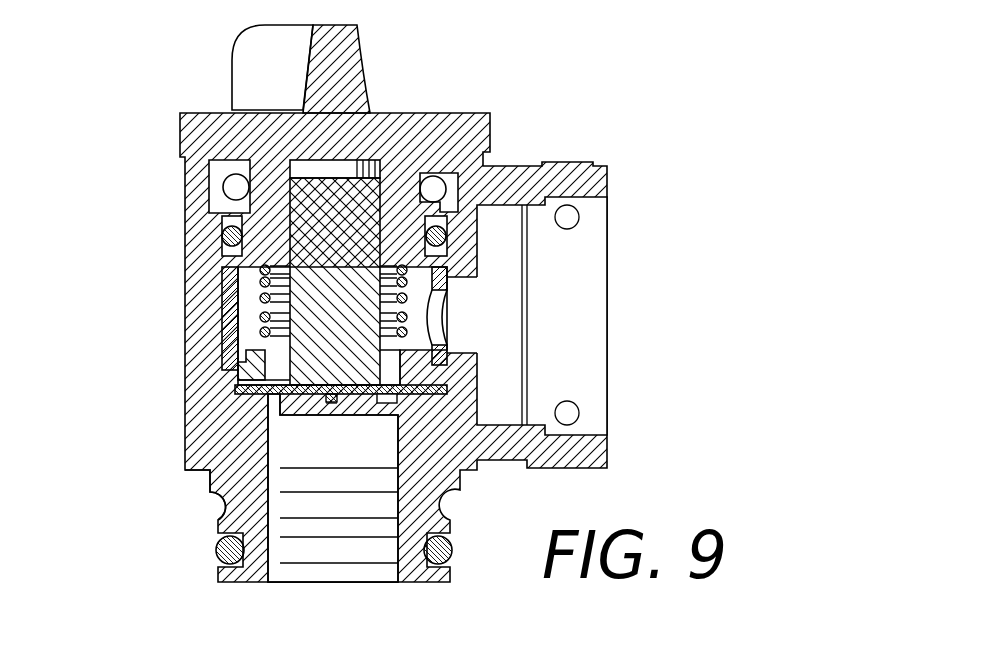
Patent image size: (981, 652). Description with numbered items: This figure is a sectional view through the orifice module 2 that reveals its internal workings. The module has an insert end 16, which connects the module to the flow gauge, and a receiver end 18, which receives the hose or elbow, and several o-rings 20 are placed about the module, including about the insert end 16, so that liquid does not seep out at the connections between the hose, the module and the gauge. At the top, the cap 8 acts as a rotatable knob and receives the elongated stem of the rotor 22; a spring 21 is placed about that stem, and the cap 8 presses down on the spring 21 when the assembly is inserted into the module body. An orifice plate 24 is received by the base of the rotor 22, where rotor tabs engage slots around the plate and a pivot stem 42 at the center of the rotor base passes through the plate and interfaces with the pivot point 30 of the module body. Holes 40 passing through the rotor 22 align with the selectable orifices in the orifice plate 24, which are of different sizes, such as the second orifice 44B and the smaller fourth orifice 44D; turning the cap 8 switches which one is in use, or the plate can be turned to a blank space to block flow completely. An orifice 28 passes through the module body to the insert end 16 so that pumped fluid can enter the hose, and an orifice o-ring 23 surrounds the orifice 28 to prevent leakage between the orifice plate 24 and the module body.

The orifice module 2 is at (728, 203).
The cap 8 is at (240, 43).
The insert end 16 is at (231, 582).
The receiver end 18 is at (608, 292).
The o-ring 20 is at (222, 232).
The spring 21 is at (270, 308).
The rotor 22 is at (315, 219).
The orifice o-ring 23 is at (237, 389).
The orifice plate 24 is at (240, 382).
The orifice 28 is at (272, 410).
The pivot point 30 is at (333, 404).
The holes 40 is at (265, 346).
The pivot stem 42 is at (332, 398).
The second orifice 44B is at (393, 384).
The fourth orifice 44D is at (245, 433).